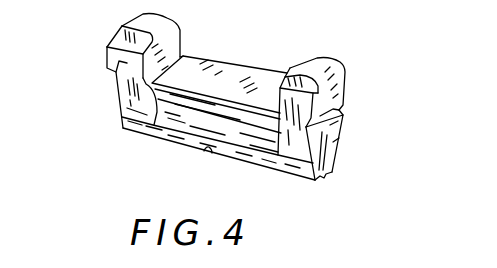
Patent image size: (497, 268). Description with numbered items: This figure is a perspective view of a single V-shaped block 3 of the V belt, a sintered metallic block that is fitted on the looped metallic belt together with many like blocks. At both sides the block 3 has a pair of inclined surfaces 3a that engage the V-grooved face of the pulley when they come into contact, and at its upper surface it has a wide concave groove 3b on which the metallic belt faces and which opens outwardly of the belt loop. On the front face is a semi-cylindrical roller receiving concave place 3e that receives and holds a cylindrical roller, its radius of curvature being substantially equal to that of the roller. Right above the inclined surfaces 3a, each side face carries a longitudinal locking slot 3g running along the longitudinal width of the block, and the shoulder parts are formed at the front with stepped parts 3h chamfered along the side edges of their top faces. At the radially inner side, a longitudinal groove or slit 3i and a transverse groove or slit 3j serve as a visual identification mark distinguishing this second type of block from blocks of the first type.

The V-shaped block 3 is at (128, 152).
The inclined surface 3a is at (342, 152).
The concave groove 3b is at (208, 50).
The roller receiving concave place 3e is at (197, 115).
The longitudinal locking slot 3g is at (342, 110).
The stepped part 3h is at (117, 32).
The longitudinal groove or slit 3i is at (208, 156).
The transverse groove or slit 3j is at (322, 184).